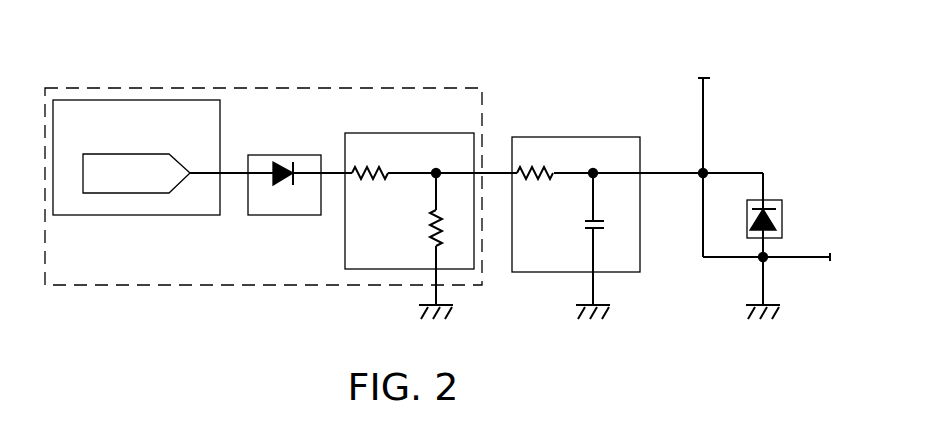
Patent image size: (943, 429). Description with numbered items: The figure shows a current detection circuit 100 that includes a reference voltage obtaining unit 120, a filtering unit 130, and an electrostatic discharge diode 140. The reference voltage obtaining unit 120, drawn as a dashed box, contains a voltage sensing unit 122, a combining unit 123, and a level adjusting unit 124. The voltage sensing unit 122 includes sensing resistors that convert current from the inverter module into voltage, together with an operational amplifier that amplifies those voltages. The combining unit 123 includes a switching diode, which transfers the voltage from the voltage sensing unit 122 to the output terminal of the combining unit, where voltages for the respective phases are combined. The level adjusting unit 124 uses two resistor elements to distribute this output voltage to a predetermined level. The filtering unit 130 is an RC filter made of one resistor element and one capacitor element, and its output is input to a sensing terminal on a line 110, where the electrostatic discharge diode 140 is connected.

The current sensing circuit 100 is at (676, 36).
The current sensing line 110 is at (730, 108).
The reference voltage obtaining unit 120 is at (398, 88).
The voltage sensing unit 122 is at (177, 100).
The combining unit 123 is at (295, 155).
The level adjusting unit 124 is at (400, 133).
The filtering unit 130 is at (625, 137).
The electrostatic discharge diode 140 is at (777, 200).